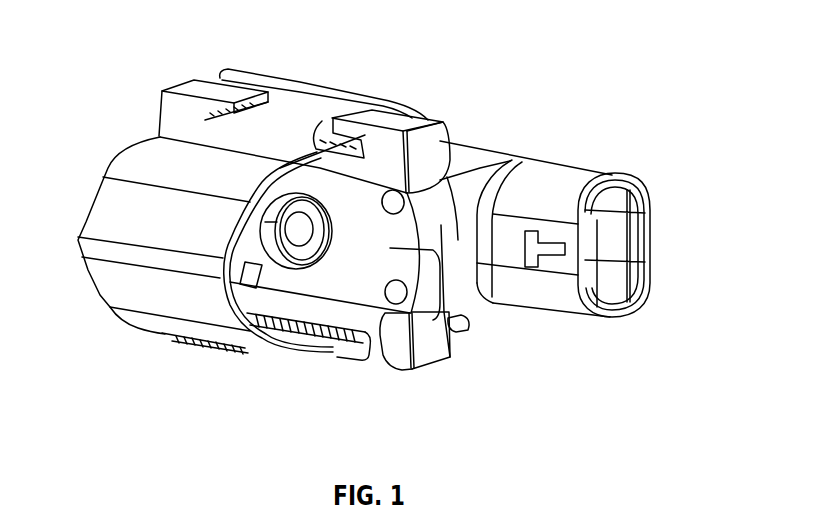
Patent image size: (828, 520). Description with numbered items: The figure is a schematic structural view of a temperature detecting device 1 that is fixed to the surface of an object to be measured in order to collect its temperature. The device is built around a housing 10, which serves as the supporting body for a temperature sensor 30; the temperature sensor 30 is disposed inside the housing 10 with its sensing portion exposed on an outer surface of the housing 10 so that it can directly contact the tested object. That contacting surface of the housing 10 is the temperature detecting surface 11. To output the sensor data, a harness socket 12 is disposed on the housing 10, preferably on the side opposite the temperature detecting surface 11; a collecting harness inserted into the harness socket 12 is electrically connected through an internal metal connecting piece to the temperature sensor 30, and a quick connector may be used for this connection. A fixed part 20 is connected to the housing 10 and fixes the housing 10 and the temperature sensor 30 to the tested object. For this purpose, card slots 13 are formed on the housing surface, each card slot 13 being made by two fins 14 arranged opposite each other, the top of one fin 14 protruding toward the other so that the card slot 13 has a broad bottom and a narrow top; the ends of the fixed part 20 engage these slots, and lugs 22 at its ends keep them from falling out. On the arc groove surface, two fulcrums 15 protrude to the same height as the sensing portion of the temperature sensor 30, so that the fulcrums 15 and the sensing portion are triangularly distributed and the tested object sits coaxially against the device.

The temperature detecting device 1 is at (313, 390).
The housing 10 is at (441, 197).
The temperature detecting surface 11 is at (456, 343).
The harness socket 12 is at (600, 237).
The card slot 13 is at (322, 143).
The fin 14 is at (207, 90).
The fulcrum 15 is at (390, 202).
The fixed part 20 is at (143, 217).
The lug 22 is at (268, 80).
The temperature sensor 30 is at (300, 227).